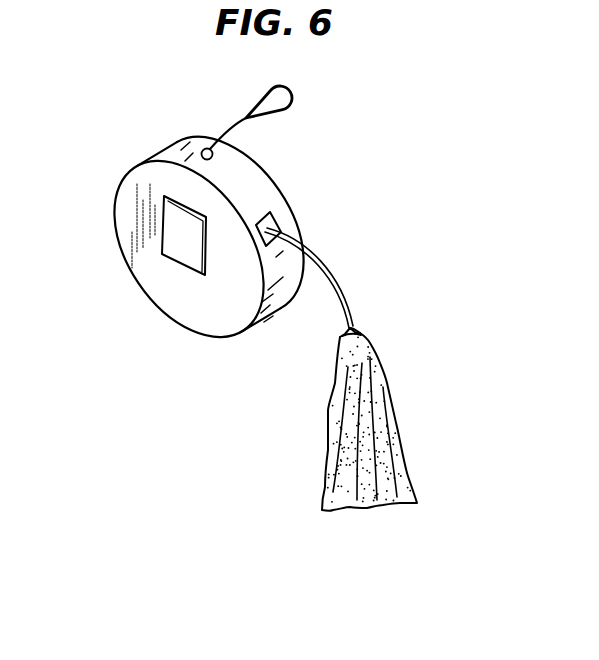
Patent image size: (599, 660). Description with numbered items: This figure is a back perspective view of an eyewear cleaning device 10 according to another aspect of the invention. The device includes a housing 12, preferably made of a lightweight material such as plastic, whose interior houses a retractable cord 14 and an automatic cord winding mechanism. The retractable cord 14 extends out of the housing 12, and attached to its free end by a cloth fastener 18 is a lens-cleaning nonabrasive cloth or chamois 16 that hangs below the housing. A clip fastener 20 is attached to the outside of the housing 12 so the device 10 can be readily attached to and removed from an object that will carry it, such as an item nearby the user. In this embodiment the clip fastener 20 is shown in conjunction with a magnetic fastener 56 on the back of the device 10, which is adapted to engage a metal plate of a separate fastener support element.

The eyewear cleaning device 10 is at (324, 138).
The housing 12 is at (148, 283).
The retractable cord 14 is at (331, 267).
The lens-cleaning nonabrasive cloth or chamois 16 is at (403, 433).
The cloth fastener 18 is at (358, 325).
The clip fastener 20 is at (292, 93).
The magnetic fastener 56 is at (174, 224).